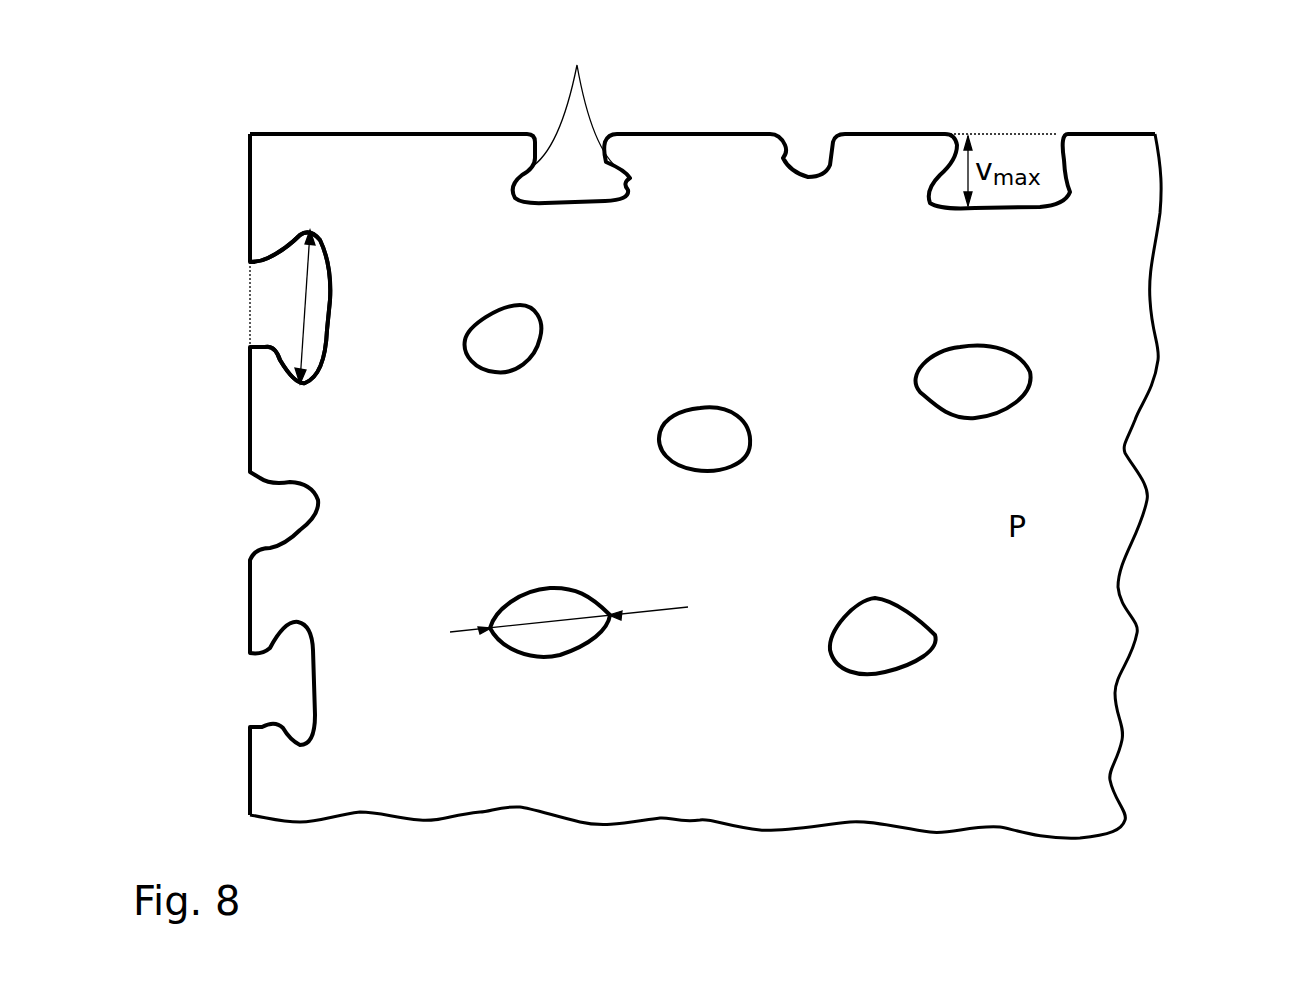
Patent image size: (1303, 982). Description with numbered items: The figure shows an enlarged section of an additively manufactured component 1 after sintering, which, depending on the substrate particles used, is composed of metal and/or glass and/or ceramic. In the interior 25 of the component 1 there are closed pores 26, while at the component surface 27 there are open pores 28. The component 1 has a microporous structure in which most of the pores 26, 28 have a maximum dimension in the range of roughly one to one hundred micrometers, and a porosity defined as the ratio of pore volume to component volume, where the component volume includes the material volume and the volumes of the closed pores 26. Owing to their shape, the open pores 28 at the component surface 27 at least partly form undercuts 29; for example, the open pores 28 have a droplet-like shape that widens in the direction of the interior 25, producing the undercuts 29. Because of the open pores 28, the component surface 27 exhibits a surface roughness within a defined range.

The component 1 is at (720, 95).
The interior of the component 25 is at (728, 372).
The closed pores 26 is at (1013, 385).
The component surface 27 is at (383, 132).
The open pores 28 is at (250, 270).
The undercuts 29 is at (577, 72).